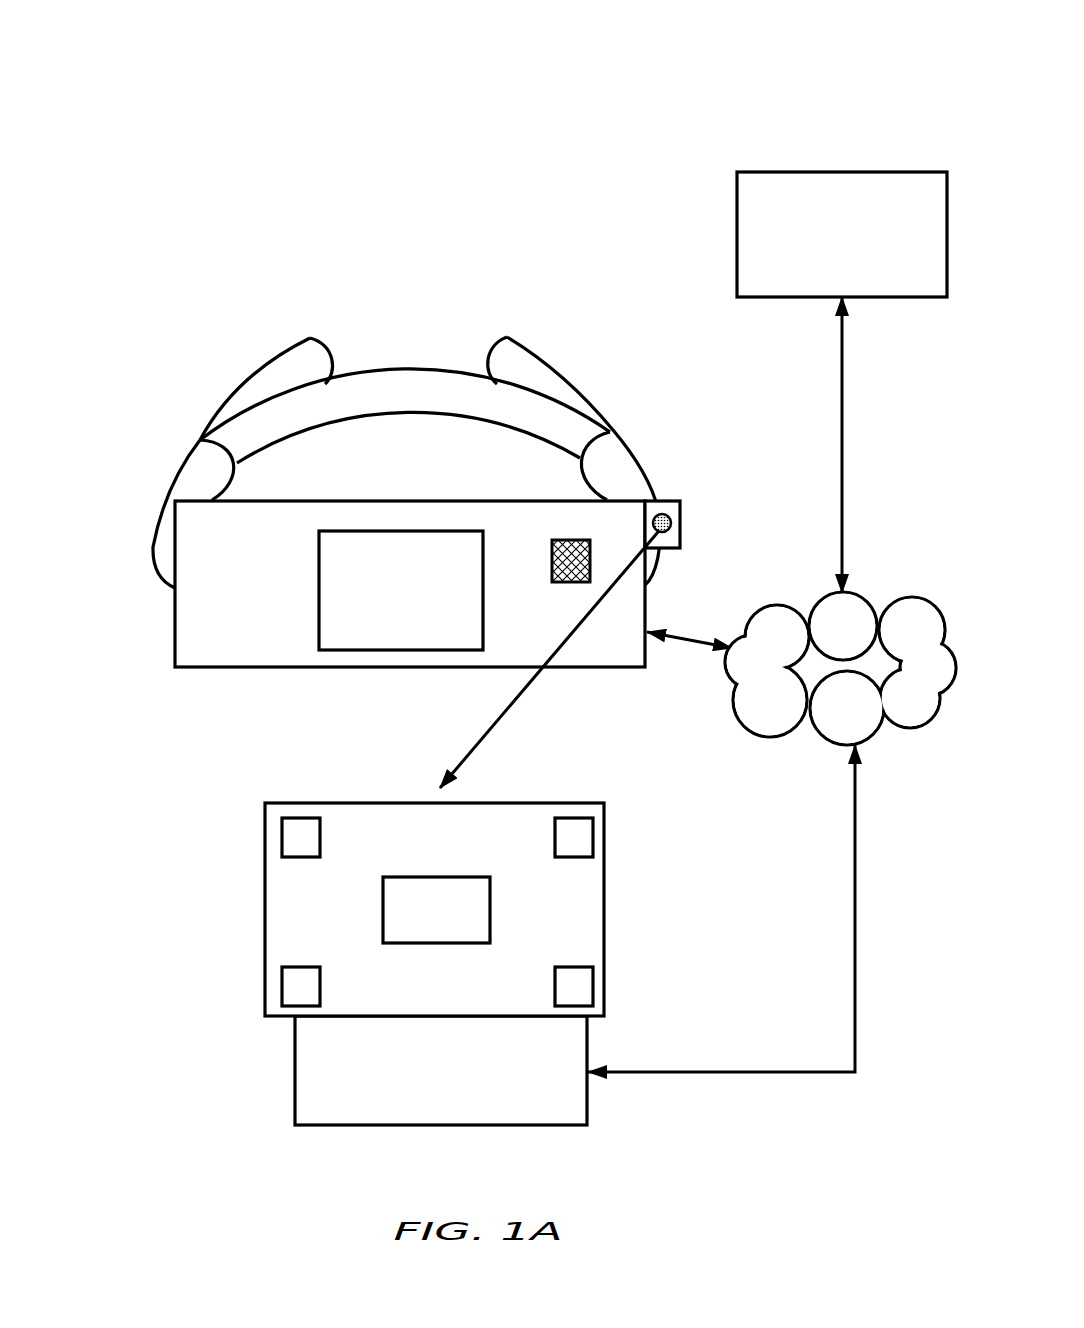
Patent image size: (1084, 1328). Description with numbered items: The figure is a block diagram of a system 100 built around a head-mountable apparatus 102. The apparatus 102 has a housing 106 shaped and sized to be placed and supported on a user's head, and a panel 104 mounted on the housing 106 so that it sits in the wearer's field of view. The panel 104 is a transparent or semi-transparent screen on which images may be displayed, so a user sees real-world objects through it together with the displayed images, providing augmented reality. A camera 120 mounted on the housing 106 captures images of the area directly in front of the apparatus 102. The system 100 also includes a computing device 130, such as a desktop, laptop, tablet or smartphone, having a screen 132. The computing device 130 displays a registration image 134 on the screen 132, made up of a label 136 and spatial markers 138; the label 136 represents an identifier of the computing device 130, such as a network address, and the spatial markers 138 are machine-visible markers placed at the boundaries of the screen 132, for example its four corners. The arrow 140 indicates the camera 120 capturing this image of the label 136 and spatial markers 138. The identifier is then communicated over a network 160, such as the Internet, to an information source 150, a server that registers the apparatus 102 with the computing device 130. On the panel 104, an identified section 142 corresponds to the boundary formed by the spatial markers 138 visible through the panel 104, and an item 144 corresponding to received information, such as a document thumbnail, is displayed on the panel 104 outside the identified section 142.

The system 100 is at (464, 64).
The apparatus 102 is at (333, 283).
The panel 104 is at (252, 667).
The housing 106 is at (248, 383).
The camera 120 is at (664, 514).
The computing device 130 is at (420, 1099).
The screen 132 is at (265, 914).
The registration image 134 is at (577, 893).
The label 136 is at (415, 924).
The spatial markers 138 is at (282, 990).
The arrow 140 is at (474, 748).
The identified section 142 is at (320, 560).
The item 144 is at (551, 563).
The information source 150 is at (821, 276).
The network 160 is at (814, 697).